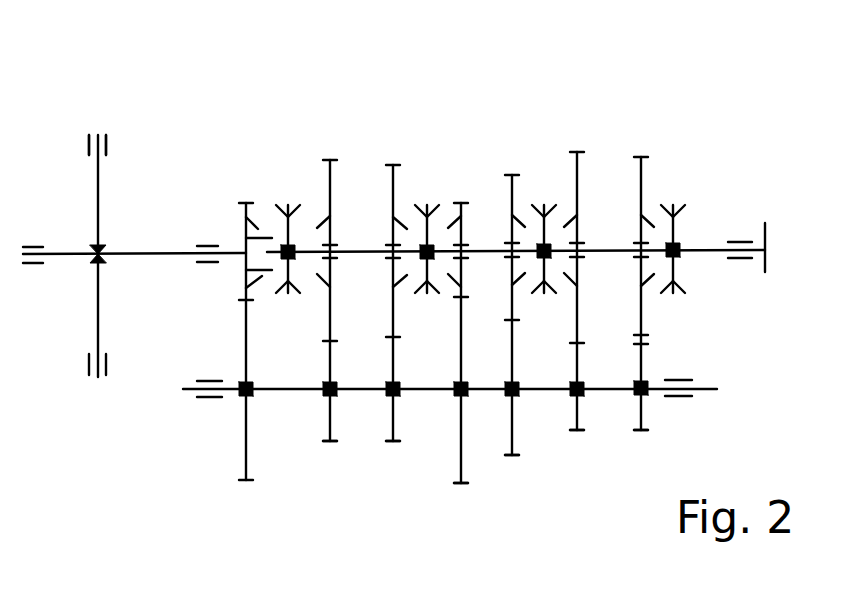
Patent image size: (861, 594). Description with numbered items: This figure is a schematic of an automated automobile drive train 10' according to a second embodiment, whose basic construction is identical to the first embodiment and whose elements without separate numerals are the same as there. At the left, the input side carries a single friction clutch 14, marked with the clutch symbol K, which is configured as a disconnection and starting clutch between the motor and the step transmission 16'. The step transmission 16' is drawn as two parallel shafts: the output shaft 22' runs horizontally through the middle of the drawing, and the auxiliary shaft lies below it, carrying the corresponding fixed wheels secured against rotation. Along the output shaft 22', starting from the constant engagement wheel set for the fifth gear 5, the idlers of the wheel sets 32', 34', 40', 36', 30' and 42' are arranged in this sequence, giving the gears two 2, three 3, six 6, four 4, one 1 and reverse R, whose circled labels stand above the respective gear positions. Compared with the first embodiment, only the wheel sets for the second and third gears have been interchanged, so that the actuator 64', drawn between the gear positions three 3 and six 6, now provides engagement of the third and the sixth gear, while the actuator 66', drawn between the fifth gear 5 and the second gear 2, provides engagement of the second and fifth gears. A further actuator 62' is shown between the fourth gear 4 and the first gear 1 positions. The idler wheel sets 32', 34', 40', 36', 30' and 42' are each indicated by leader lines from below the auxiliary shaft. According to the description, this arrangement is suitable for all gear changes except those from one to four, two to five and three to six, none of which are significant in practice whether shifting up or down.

The drive train 10' is at (695, 54).
The friction clutch 14 is at (98, 187).
The step transmission 16' is at (449, 241).
The output shaft 22' is at (394, 220).
The wheel set for the first gear 30' is at (585, 475).
The wheel set for the second gear 32' is at (335, 486).
The wheel set for the third gear 34' is at (400, 485).
The wheel set for the fourth gear 36' is at (519, 503).
The wheel set for the sixth gear 40' is at (471, 527).
The wheel set for the reverse gear 42' is at (645, 478).
The actuator 62' is at (543, 181).
The actuator 64' is at (425, 183).
The actuator 66' is at (287, 182).
The clutch K is at (97, 130).
The first gear 1 is at (576, 271).
The second gear 2 is at (330, 282).
The third gear 3 is at (392, 283).
The fourth gear 4 is at (510, 296).
The fifth gear 5 is at (250, 323).
The sixth gear 6 is at (459, 325).
The reverse gear R is at (639, 274).